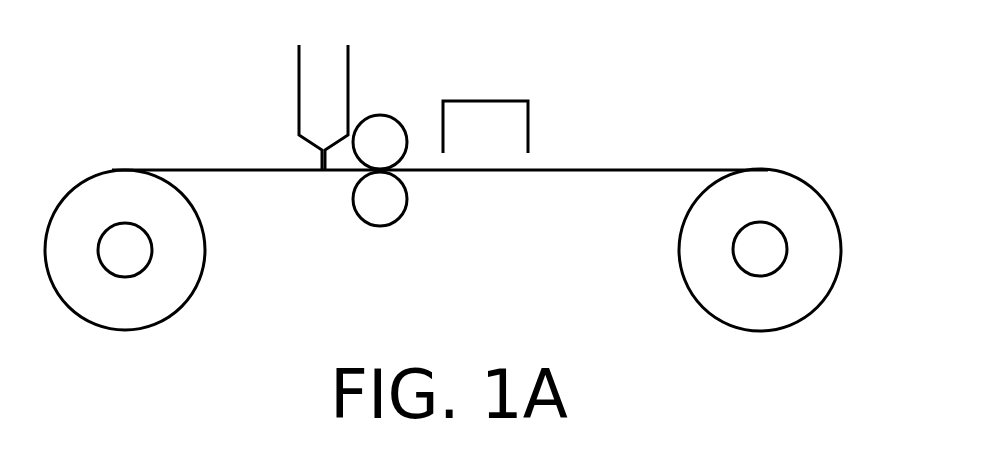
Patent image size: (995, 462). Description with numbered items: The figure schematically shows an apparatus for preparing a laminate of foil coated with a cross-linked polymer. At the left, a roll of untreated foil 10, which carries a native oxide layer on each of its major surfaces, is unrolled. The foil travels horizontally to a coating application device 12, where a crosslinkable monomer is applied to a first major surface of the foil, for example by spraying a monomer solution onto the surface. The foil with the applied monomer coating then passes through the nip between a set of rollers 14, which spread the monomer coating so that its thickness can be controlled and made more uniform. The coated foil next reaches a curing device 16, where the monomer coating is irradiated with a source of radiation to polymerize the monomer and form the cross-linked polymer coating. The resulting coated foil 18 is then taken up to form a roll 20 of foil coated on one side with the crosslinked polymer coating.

The roll of untreated foil 10 is at (123, 193).
The coating application device 12 is at (325, 75).
The set of rollers 14 is at (385, 203).
The curing device 16 is at (485, 115).
The coated foil 18 is at (628, 205).
The roll of foil coated on one side 20 is at (785, 205).